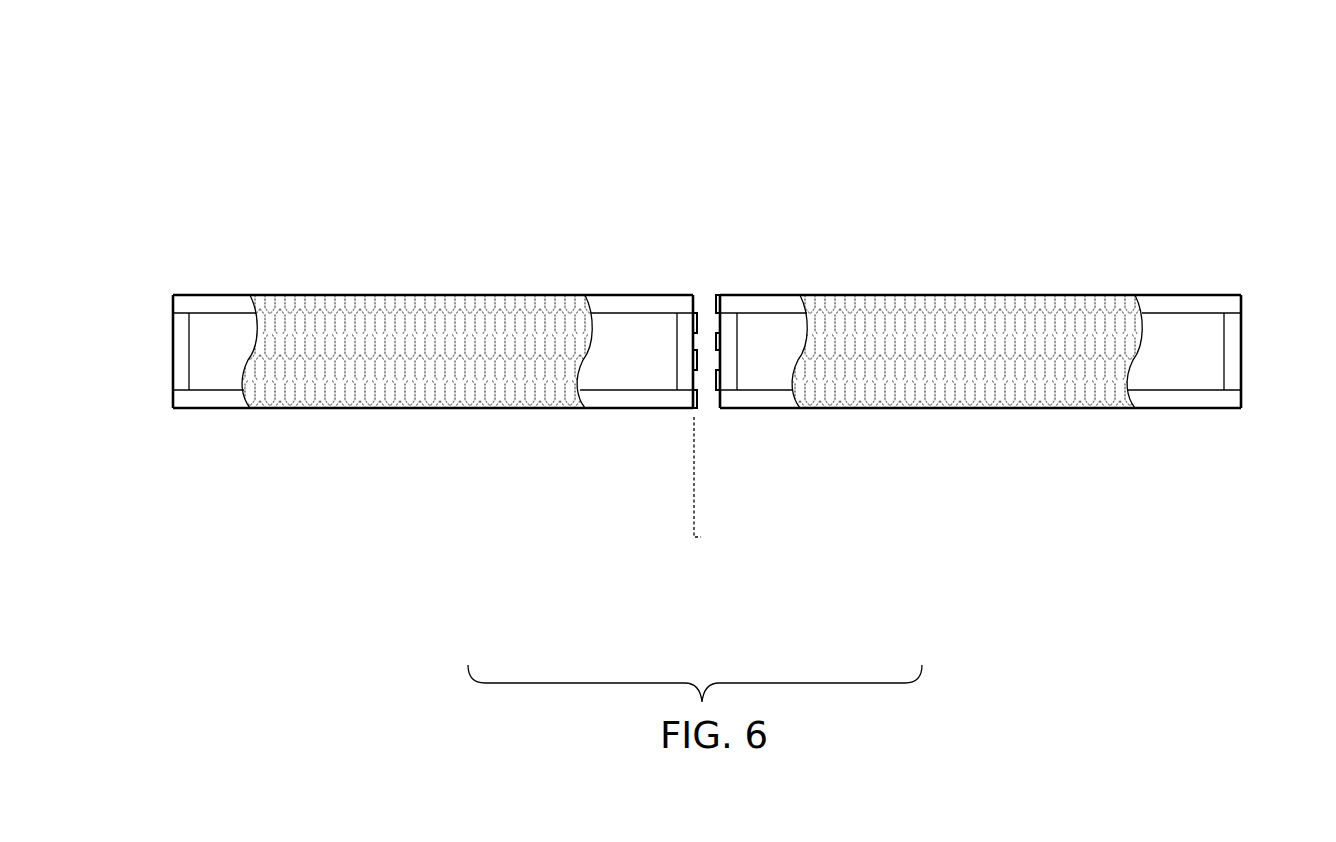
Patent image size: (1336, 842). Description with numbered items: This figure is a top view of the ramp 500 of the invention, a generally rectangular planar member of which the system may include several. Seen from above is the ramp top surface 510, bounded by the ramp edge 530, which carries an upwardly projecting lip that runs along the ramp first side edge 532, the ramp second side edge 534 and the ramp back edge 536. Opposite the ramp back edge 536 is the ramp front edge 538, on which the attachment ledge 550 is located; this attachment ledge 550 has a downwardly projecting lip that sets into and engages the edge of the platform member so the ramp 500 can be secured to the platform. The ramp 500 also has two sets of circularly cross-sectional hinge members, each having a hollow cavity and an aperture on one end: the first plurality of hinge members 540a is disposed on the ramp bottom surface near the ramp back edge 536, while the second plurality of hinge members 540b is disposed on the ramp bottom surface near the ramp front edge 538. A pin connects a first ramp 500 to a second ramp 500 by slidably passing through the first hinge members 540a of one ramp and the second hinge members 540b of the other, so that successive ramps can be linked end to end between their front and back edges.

The ramp 500 is at (385, 138).
The ramp top surface 510 is at (695, 303).
The ramp edge 530 is at (213, 295).
The ramp first side edge 532 is at (1169, 295).
The ramp second side edge 534 is at (1188, 408).
The ramp back edge 536 is at (1241, 345).
The ramp front edge 538 is at (173, 343).
The first plurality of circularly cross-sectional hinge members 540a is at (687, 406).
The second plurality of circularly cross-sectional hinge members 540b is at (718, 342).
The attachment ledge 550 is at (132, 386).